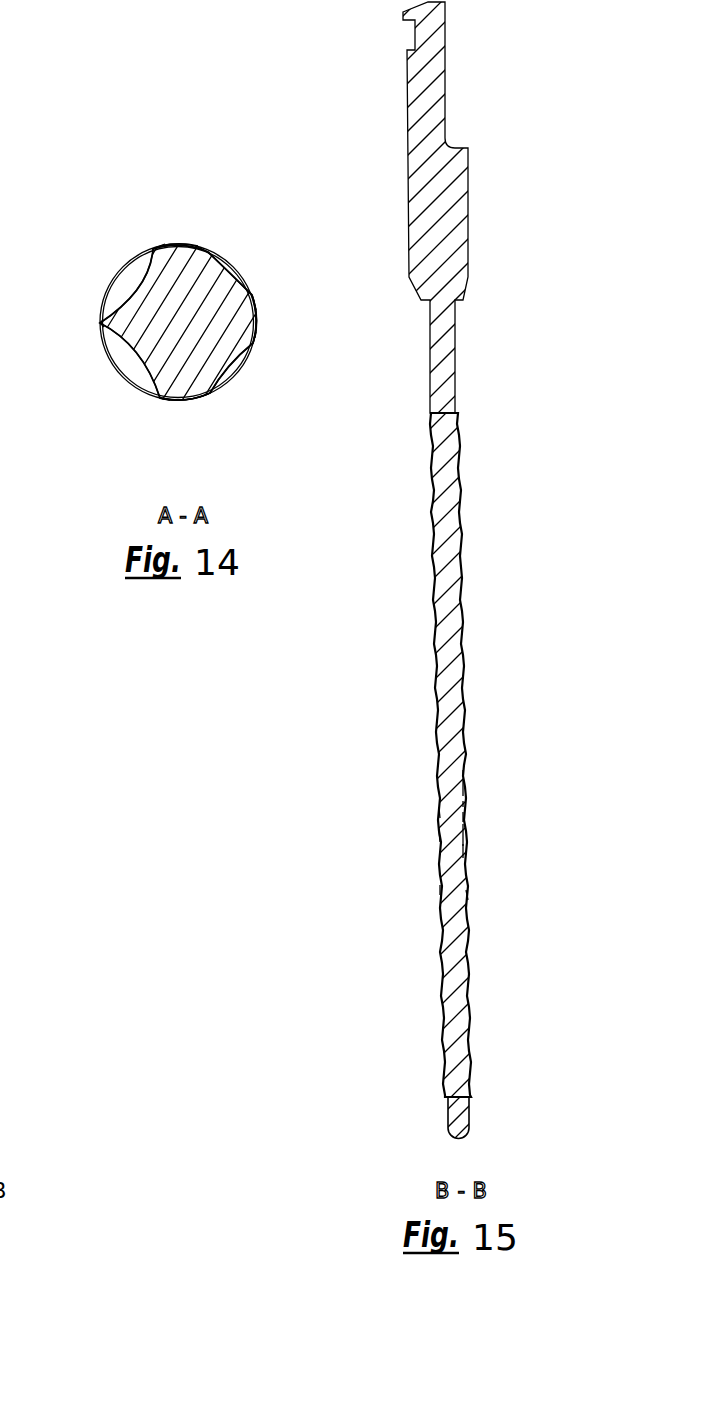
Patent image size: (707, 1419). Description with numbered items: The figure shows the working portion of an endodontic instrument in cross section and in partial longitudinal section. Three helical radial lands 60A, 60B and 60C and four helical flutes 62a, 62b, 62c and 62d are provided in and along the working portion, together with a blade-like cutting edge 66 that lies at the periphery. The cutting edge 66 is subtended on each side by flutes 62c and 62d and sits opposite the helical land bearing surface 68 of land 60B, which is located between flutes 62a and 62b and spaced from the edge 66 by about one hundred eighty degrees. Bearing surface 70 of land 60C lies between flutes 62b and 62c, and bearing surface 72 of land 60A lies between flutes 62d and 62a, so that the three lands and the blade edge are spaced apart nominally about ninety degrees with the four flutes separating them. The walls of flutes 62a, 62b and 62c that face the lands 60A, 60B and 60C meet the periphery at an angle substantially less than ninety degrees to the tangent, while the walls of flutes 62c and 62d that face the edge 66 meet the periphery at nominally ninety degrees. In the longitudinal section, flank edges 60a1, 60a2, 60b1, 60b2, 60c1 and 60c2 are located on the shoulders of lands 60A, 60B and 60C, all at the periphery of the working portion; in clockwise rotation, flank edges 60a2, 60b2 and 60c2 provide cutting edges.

In FIG. 14, the helical radial land 60A is at (183, 393).
In FIG. 15, the helical radial land 60A is at (463, 785).
In FIG. 14, the helical radial land 60B is at (258, 313).
In FIG. 15, the helical radial land 60B is at (463, 817).
In FIG. 14, the helical radial land 60C is at (178, 242).
In FIG. 15, the helical radial land 60C is at (463, 840).
In FIG. 14, the flank edge 60a1 is at (158, 398).
In FIG. 15, the flank edge 60a1 is at (463, 772).
In FIG. 14, the flank edge 60a2 is at (215, 393).
In FIG. 15, the flank edge 60a2 is at (463, 793).
In FIG. 14, the flank edge 60b1 is at (258, 342).
In FIG. 15, the flank edge 60b1 is at (463, 804).
In FIG. 14, the flank edge 60b2 is at (262, 297).
In FIG. 15, the flank edge 60b2 is at (463, 827).
In FIG. 14, the flank edge 60c1 is at (220, 249).
In FIG. 15, the flank edge 60c1 is at (463, 833).
In FIG. 14, the flank edge 60c2 is at (152, 243).
In FIG. 15, the flank edge 60c2 is at (463, 847).
In FIG. 14, the helical flute 62a is at (242, 370).
In FIG. 15, the helical flute 62a is at (440, 813).
In FIG. 14, the helical flute 62b is at (233, 268).
In FIG. 15, the helical flute 62b is at (440, 837).
In FIG. 14, the helical flute 62c is at (113, 285).
In FIG. 15, the helical flute 62c is at (463, 853).
In FIG. 14, the helical flute 62d is at (125, 370).
In FIG. 15, the helical flute 62d is at (468, 895).
In FIG. 14, the blade-like cutting edge 66 is at (102, 323).
In FIG. 15, the blade-like cutting edge 66 is at (440, 890).
In FIG. 14, the helical land bearing surface 68 is at (262, 325).
In FIG. 14, the bearing surface 70 is at (197, 243).
In FIG. 14, the bearing surface 72 is at (203, 399).